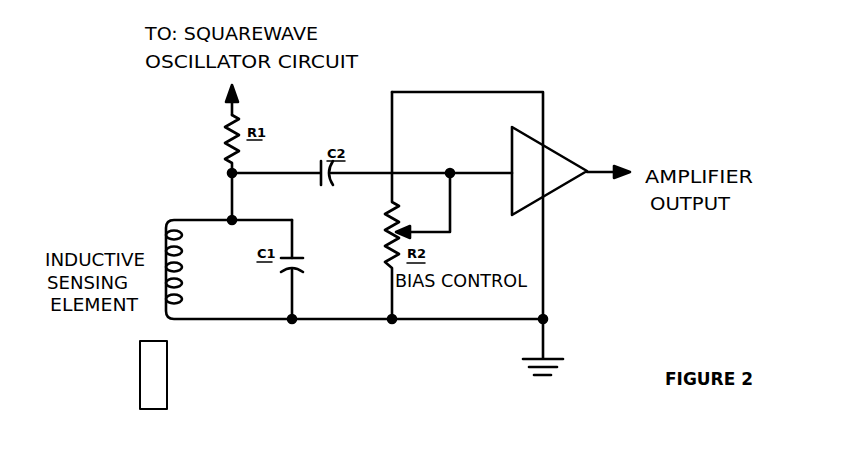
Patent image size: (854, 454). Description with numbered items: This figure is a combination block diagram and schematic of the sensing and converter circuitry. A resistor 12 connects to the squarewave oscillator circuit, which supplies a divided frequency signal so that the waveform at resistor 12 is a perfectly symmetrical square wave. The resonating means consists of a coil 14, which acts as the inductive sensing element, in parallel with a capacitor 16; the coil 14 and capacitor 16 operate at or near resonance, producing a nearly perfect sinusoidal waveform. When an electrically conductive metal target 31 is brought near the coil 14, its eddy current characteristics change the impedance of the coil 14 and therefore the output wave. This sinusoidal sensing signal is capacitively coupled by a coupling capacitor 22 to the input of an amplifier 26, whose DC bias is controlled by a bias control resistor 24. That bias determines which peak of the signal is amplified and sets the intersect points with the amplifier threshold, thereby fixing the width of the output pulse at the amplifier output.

The resistor 12 is at (227, 133).
The coil 14 is at (164, 236).
The capacitor 16 is at (300, 257).
The coupling capacitor 22 is at (334, 178).
The bias control resistor 24 is at (388, 263).
The amplifier 26 is at (565, 189).
The metal target 31 is at (140, 391).